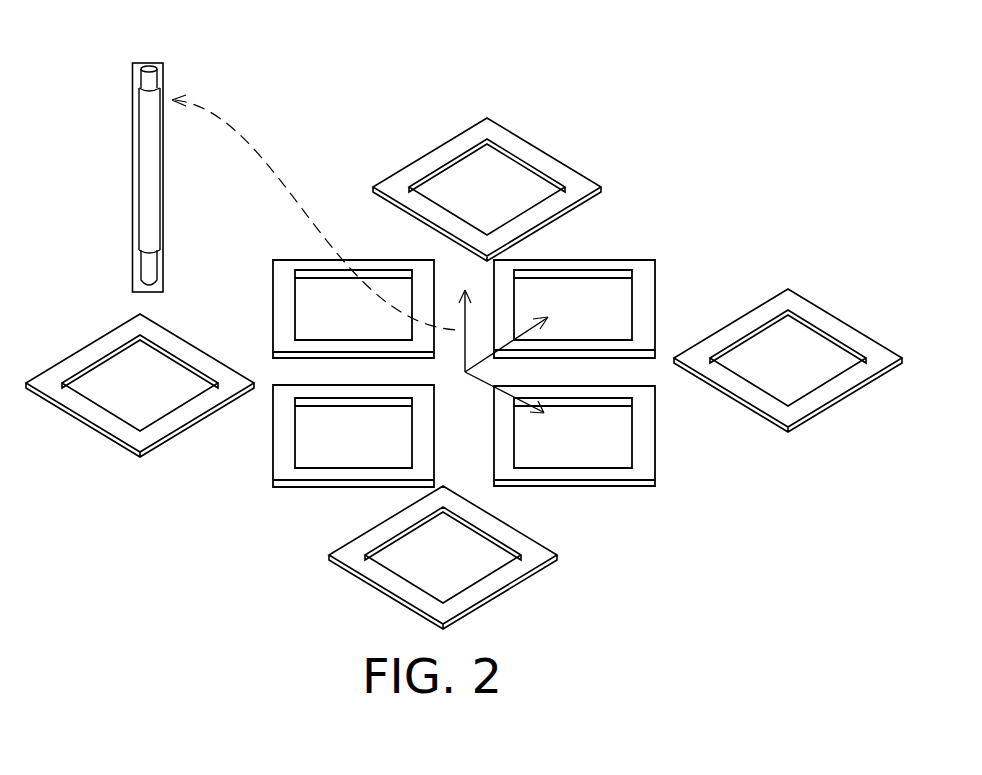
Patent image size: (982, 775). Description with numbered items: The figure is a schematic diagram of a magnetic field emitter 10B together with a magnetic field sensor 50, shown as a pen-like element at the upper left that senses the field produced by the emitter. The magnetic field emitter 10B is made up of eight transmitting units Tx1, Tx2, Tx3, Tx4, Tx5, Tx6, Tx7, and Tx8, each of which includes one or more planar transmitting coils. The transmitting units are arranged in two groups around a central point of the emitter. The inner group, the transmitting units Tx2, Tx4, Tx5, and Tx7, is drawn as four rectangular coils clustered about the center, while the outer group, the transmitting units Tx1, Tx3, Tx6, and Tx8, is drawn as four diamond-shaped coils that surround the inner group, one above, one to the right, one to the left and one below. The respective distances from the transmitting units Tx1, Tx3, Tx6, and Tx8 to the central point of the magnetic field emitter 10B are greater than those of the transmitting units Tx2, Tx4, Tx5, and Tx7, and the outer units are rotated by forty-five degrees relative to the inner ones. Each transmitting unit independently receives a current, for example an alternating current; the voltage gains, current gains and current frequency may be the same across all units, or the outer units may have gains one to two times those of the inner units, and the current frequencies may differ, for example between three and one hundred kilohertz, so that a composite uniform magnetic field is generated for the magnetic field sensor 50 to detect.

The magnetic field sensor 50 is at (155, 63).
The magnetic field emitter 10B is at (710, 537).
The transmitting unit Tx1 is at (487, 189).
The transmitting unit Tx2 is at (574, 309).
The transmitting unit Tx3 is at (788, 360).
The transmitting unit Tx4 is at (353, 309).
The transmitting unit Tx5 is at (574, 436).
The transmitting unit Tx6 is at (140, 385).
The transmitting unit Tx7 is at (353, 436).
The transmitting unit Tx8 is at (443, 557).